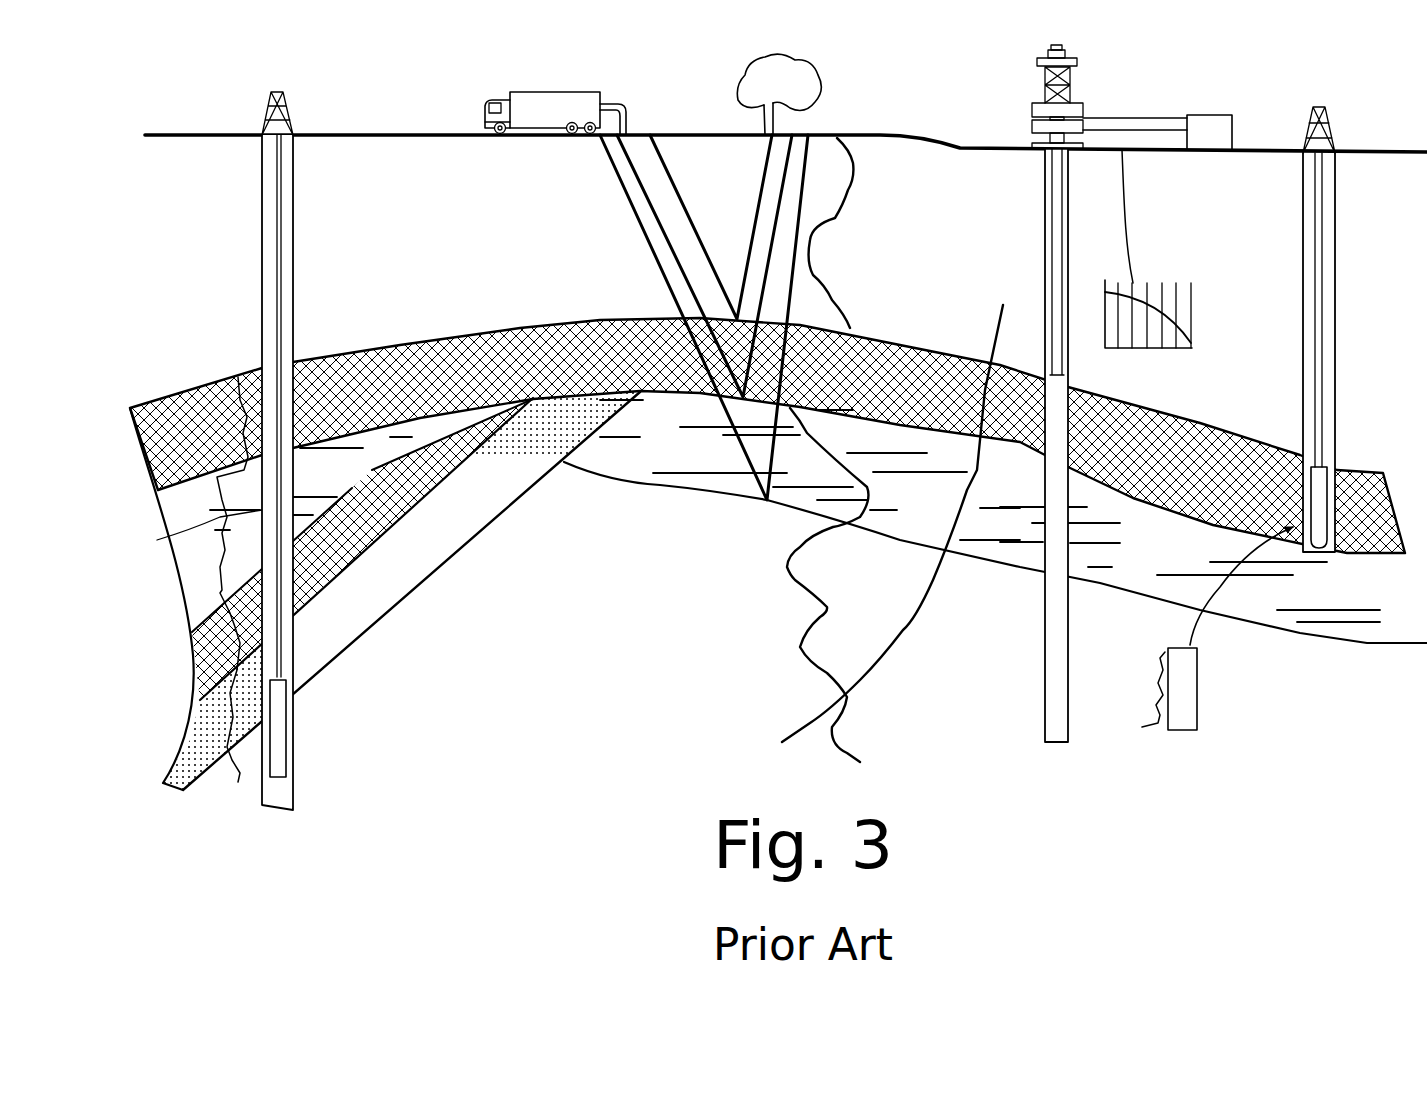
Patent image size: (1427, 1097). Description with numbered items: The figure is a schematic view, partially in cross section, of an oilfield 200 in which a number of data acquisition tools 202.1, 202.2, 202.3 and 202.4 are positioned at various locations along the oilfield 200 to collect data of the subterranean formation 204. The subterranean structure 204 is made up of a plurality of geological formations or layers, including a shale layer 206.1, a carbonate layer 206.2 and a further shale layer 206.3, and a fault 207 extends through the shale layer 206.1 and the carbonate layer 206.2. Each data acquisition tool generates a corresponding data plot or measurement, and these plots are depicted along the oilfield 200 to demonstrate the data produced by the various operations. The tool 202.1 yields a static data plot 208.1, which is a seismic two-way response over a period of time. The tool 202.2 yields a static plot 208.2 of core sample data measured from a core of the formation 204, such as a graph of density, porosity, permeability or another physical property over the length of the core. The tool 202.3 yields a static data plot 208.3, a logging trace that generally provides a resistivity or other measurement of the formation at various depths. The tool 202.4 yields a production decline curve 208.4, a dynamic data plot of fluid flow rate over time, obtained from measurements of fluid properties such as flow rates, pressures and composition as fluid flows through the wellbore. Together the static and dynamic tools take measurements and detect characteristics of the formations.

The oilfield 200 is at (1268, 117).
The data acquisition tool 202.1 is at (520, 92).
The data acquisition tool 202.2 is at (1328, 527).
The data acquisition tool 202.3 is at (286, 732).
The data acquisition tool 202.4 is at (1043, 417).
The subterranean formation 204 is at (622, 588).
The shale layer 206.1 is at (545, 374).
The carbonate layer 206.2 is at (358, 480).
The shale layer 206.3 is at (428, 500).
The fault 207 is at (1000, 321).
The static data plot 208.1 is at (822, 614).
The static plot 208.2 is at (1191, 628).
The static data plot 208.3 is at (175, 538).
The production decline curve 208.4 is at (1140, 275).